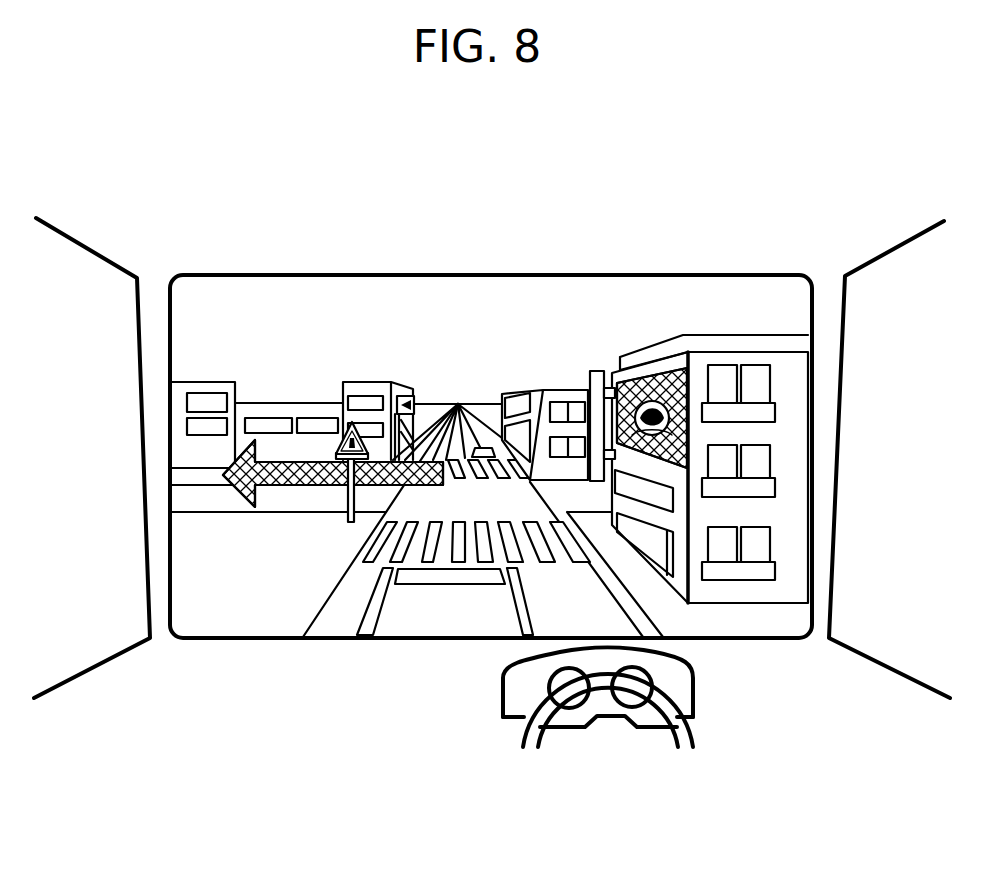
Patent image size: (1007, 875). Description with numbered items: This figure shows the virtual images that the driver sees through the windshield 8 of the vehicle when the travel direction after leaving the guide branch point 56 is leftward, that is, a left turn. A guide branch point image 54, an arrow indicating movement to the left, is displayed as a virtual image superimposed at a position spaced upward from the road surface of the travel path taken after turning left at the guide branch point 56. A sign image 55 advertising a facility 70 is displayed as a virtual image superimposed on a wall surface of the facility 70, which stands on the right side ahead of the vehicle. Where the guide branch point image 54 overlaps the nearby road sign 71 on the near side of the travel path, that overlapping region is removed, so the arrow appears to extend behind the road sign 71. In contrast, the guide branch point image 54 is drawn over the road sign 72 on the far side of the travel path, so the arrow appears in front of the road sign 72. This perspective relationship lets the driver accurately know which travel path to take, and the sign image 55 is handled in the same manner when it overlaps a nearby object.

The windshield 8 is at (756, 314).
The guide branch point image 54 is at (275, 463).
The sign image 55 is at (653, 373).
The guide branch point 56 is at (507, 495).
The facility 70 is at (700, 373).
The road sign 71 is at (345, 420).
The road sign 72 is at (392, 412).